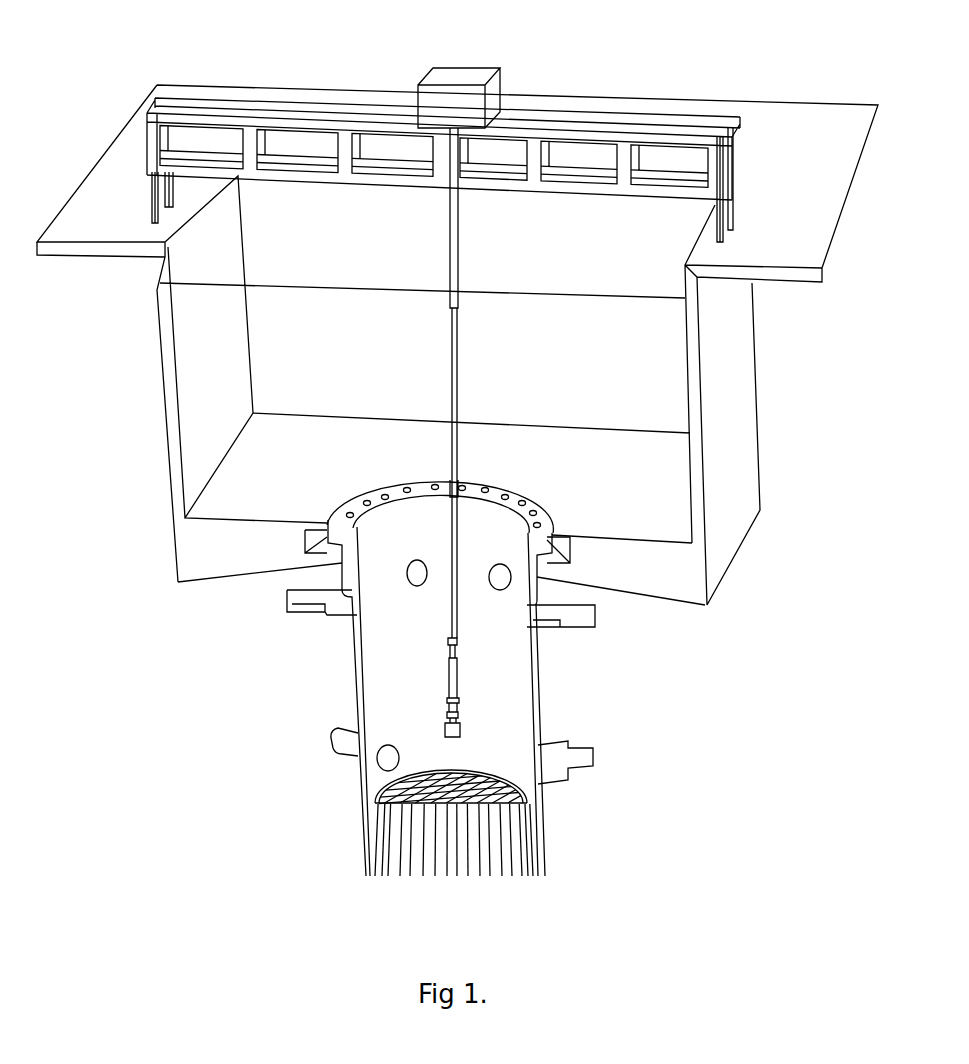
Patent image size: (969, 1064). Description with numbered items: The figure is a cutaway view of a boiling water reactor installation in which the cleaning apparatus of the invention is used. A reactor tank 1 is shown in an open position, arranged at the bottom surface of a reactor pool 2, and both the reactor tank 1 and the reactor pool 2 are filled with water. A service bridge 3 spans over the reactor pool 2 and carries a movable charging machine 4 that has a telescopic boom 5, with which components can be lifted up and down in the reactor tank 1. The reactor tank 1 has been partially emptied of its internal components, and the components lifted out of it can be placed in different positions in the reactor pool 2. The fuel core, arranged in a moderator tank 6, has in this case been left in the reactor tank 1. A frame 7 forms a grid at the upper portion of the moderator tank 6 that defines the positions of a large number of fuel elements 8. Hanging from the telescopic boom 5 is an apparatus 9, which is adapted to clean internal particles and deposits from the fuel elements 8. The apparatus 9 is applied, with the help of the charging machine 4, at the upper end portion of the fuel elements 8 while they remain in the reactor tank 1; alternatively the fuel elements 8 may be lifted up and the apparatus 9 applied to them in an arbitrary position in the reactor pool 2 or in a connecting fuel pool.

The reactor tank 1 is at (398, 527).
The reactor pool 2 is at (358, 344).
The service bridge 3 is at (345, 117).
The charging machine 4 is at (453, 95).
The telescopic boom 5 is at (455, 362).
The moderator tank 6 is at (520, 802).
The frame 7 is at (410, 792).
The fuel elements 8 is at (497, 777).
The apparatus 9 is at (448, 685).